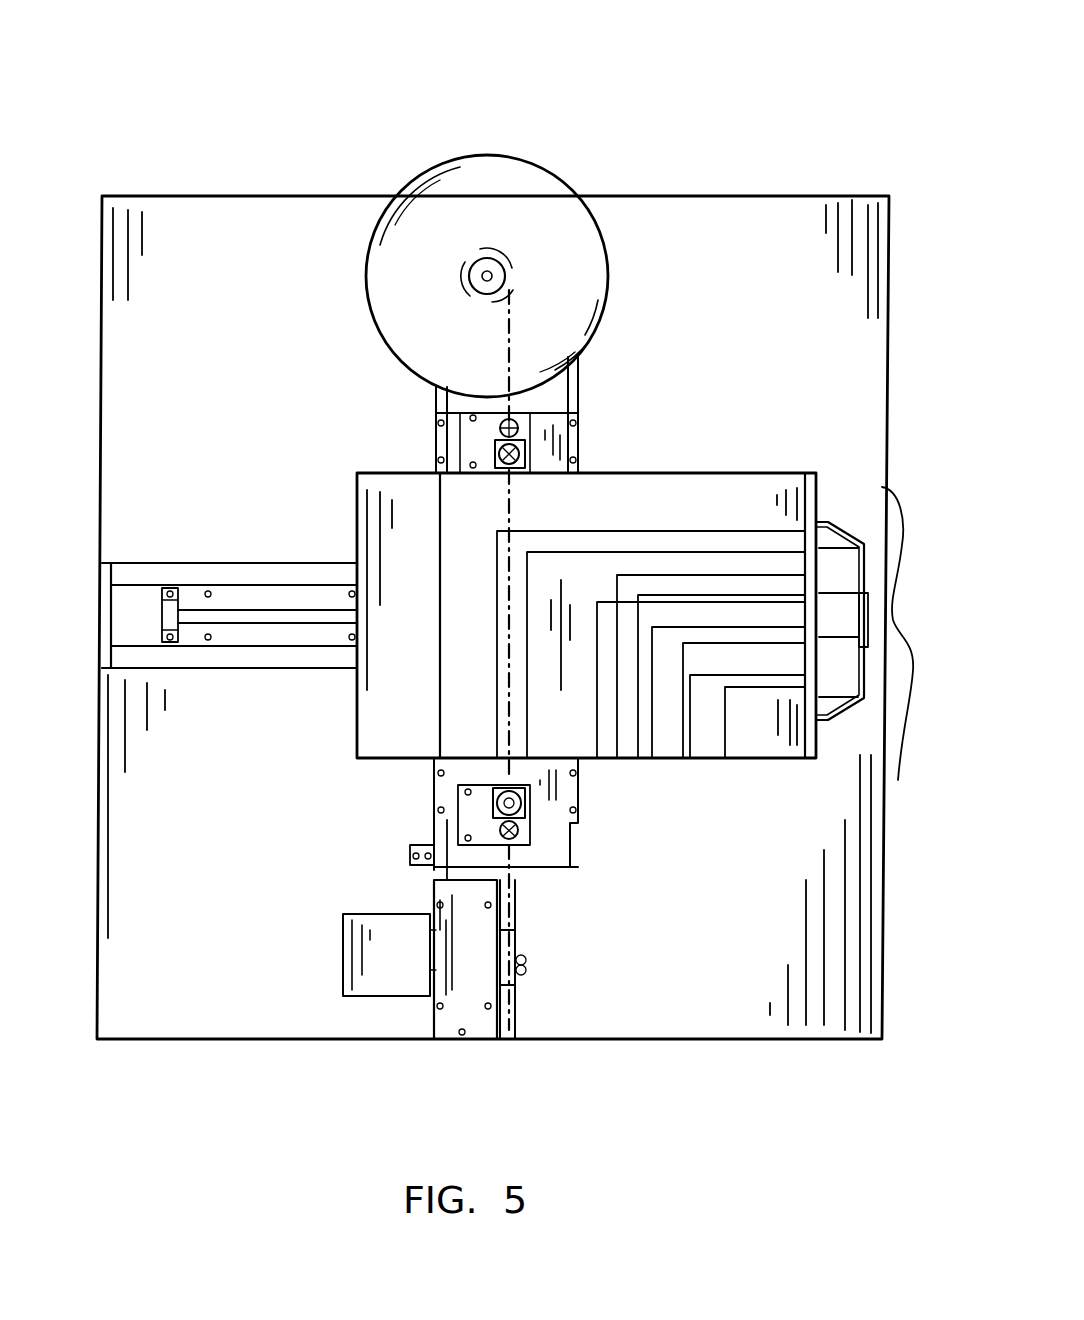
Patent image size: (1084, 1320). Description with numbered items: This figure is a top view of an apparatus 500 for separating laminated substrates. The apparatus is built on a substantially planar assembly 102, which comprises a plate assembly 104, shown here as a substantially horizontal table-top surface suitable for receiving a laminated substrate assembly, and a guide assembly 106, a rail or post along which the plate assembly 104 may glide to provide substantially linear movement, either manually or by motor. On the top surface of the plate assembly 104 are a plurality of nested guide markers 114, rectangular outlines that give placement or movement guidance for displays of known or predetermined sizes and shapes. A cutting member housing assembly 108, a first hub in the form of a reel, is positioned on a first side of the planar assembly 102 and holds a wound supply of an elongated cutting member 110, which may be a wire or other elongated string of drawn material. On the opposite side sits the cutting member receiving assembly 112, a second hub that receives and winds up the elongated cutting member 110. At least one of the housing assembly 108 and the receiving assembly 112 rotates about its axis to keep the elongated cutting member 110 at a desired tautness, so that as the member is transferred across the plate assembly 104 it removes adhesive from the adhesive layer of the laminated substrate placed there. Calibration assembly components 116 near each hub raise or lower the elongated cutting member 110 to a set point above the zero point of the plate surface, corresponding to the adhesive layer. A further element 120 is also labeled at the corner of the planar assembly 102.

The material dispensing system 500 is at (203, 135).
The substantially planar assembly 102 is at (900, 770).
The plate assembly 104 is at (762, 745).
The guide assembly 106 is at (842, 527).
The cutting member housing assembly 108 is at (577, 193).
The elongated cutting member 110 is at (512, 422).
The cutting member receiving assembly 112 is at (508, 1023).
The guide marker 114 is at (763, 553).
The calibration assembly 116 is at (495, 455).
The table frame 120 is at (158, 213).